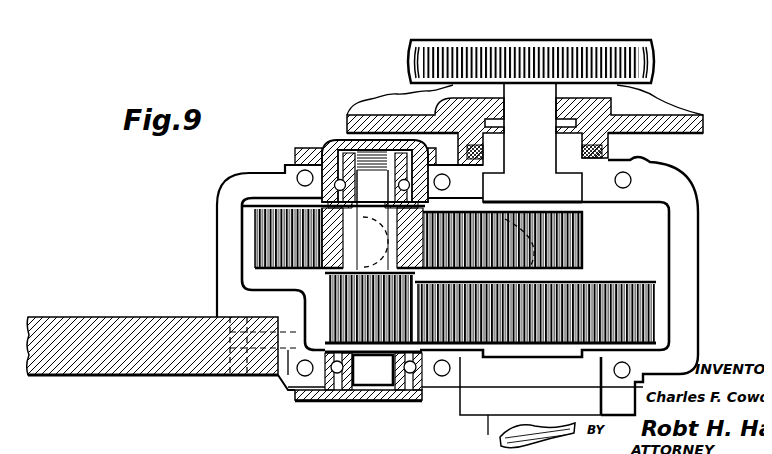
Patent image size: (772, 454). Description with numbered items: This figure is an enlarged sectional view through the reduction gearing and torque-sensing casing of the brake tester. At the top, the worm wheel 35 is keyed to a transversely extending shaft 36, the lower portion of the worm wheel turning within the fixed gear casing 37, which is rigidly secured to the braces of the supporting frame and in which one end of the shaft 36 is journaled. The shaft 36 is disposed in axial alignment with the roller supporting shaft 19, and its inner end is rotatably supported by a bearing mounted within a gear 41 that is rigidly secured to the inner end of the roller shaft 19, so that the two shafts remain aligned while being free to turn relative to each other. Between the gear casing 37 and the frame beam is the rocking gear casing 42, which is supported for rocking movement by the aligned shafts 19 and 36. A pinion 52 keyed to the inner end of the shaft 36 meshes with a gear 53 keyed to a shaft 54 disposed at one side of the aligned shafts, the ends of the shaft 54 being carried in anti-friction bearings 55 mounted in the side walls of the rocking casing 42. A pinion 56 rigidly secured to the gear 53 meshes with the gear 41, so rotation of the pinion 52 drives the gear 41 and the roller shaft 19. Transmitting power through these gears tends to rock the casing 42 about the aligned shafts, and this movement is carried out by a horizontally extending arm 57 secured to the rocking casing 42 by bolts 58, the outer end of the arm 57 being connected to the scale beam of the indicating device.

The roller supporting shaft 19 is at (497, 436).
The worm wheel 35 is at (416, 52).
The shaft 36 is at (539, 92).
The gear casing 37 is at (683, 111).
The gear 41 is at (649, 312).
The rocking gear casing 42 is at (683, 297).
The pinion 52 is at (578, 235).
The gear 53 is at (262, 205).
The shaft 54 is at (356, 151).
The anti-friction bearings 55 is at (332, 177).
The pinion 56 is at (358, 332).
The arm 57 is at (75, 312).
The bolts 58 is at (227, 372).